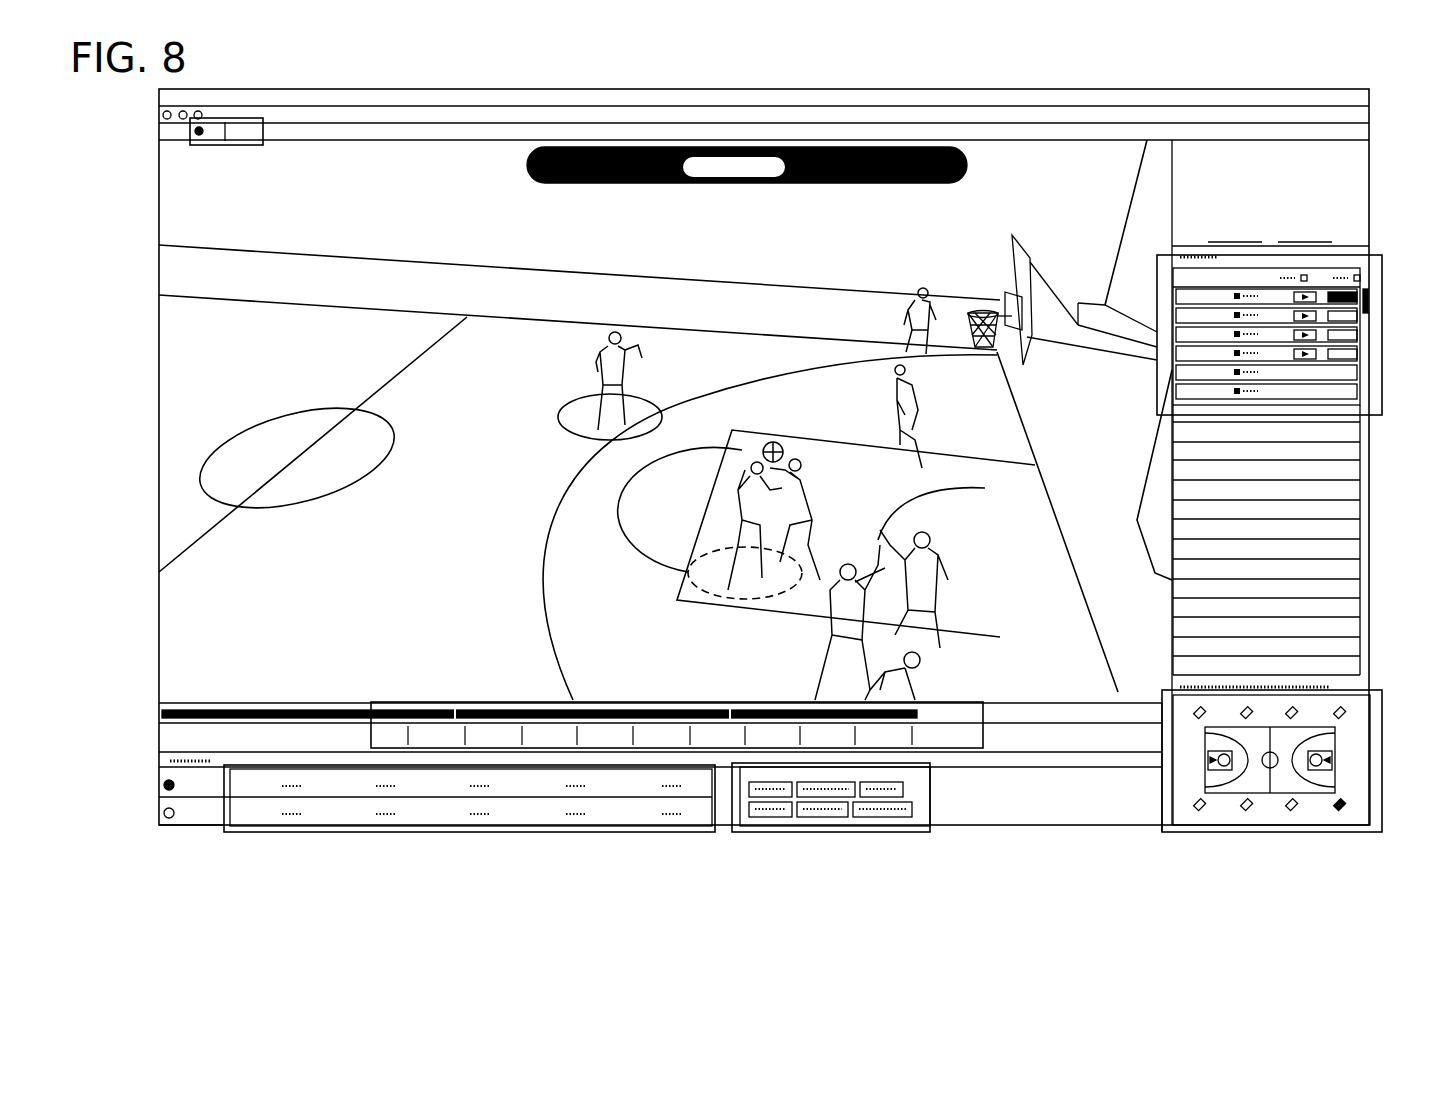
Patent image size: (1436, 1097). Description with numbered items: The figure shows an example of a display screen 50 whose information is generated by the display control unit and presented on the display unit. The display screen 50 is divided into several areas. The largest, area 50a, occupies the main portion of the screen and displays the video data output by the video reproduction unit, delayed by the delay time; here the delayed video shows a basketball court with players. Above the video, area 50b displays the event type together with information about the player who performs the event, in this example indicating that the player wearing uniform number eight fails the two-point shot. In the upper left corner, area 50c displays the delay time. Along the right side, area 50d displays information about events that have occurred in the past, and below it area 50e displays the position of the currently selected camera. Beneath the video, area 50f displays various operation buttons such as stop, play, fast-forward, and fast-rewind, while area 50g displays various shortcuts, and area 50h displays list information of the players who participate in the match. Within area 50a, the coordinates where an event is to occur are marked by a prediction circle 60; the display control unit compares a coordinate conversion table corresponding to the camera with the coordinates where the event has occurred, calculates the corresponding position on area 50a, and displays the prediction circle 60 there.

The display screen 50 is at (1370, 112).
The area 50a is at (195, 193).
The area 50b is at (785, 180).
The area 50c is at (245, 118).
The area 50d is at (1382, 338).
The area 50e is at (1382, 760).
The area 50f is at (430, 702).
The area 50g is at (832, 832).
The area 50h is at (468, 832).
The prediction circle 60 is at (582, 405).